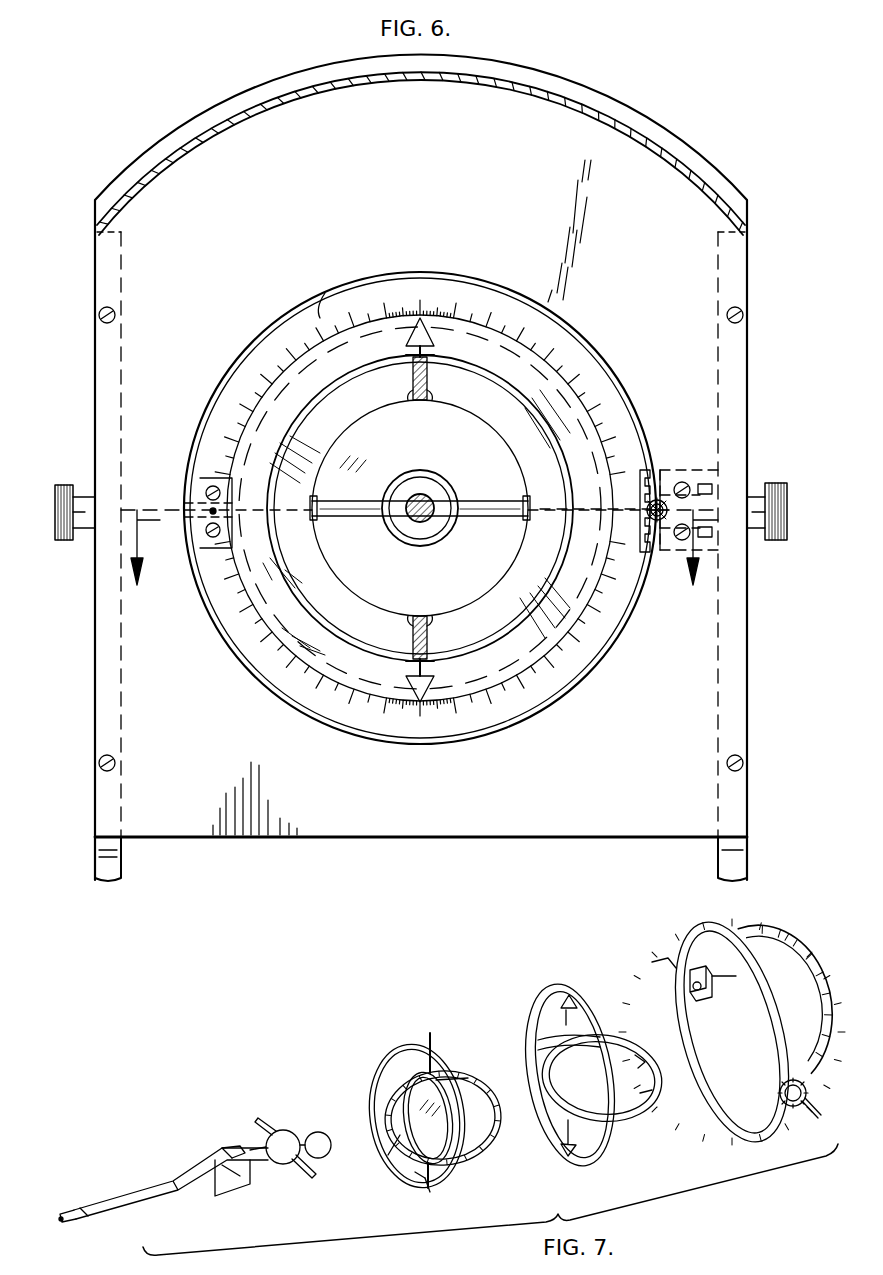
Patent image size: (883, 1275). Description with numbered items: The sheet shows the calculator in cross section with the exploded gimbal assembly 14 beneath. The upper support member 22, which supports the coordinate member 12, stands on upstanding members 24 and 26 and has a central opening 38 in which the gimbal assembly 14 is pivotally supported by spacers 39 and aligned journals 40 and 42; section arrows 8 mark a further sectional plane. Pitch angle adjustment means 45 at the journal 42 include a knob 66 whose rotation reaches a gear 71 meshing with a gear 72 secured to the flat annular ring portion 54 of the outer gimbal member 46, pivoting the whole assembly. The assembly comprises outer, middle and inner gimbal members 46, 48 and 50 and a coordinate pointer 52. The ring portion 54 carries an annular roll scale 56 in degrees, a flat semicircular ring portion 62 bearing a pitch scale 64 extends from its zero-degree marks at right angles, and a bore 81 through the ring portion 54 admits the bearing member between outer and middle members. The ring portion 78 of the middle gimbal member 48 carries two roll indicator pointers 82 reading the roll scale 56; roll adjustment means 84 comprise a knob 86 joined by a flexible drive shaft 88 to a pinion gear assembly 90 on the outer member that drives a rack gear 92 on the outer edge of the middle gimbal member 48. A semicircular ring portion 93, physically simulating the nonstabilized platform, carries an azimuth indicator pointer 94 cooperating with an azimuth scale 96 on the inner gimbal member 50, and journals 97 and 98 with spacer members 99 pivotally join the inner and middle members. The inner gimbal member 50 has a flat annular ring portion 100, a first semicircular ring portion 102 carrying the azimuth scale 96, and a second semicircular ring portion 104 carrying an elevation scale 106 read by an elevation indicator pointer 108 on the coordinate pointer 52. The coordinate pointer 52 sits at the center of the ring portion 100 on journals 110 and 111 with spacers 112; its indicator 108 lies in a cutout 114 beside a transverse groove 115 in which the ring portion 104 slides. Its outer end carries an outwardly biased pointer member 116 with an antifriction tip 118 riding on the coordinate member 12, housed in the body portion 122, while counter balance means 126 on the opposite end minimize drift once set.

In FIG. 6, the section line 8- 8 is at (423, 566).
In FIG. 6, the coordinate member 12 is at (372, 85).
In FIG. 7, the gimbal assembly 14 is at (338, 1032).
In FIG. 6, the upper support member 22 is at (572, 85).
In FIG. 6, the upstanding member 24 is at (112, 882).
In FIG. 6, the upstanding member 26 is at (752, 850).
In FIG. 6, the opening 38 is at (420, 523).
In FIG. 6, the spacers 39 is at (200, 503).
In FIG. 6, the journal 40 is at (175, 530).
In FIG. 7, the journal 40 is at (652, 962).
In FIG. 6, the journal 42 is at (595, 534).
In FIG. 7, the journal 42 is at (812, 1118).
In FIG. 6, the pitch angle adjustment means 45 is at (700, 472).
In FIG. 6, the outer gimbal member 46 is at (399, 525).
In FIG. 7, the outer gimbal member 46 is at (740, 928).
In FIG. 6, the middle gimbal member 48 is at (571, 553).
In FIG. 7, the middle gimbal member 48 is at (524, 1000).
In FIG. 6, the inner gimbal member 50 is at (322, 600).
In FIG. 7, the inner gimbal member 50 is at (372, 1088).
In FIG. 6, the coordinate pointer 52 is at (404, 523).
In FIG. 7, the coordinate pointer 52 is at (175, 1162).
In FIG. 6, the flat annular ring portion 54 is at (442, 508).
In FIG. 7, the flat annular ring portion 54 is at (752, 1138).
In FIG. 6, the annular roll scale 56 is at (419, 508).
In FIG. 7, the annular roll scale 56 is at (708, 1110).
In FIG. 7, the flat semicircular ring portion 62 is at (804, 940).
In FIG. 7, the pitch scale 64 is at (822, 970).
In FIG. 6, the knob 66 is at (787, 488).
In FIG. 6, the gear 71 is at (660, 548).
In FIG. 6, the gear 72 is at (654, 474).
In FIG. 7, the gear 72 is at (806, 1092).
In FIG. 6, the ring portion 78 is at (247, 609).
In FIG. 7, the ring portion 78 is at (596, 1158).
In FIG. 6, the bore 81 is at (319, 284).
In FIG. 6, the roll indicator pointers 82 is at (420, 512).
In FIG. 7, the roll indicator pointers 82 is at (576, 1008).
In FIG. 7, the roll adjustment means 84 is at (705, 1002).
In FIG. 6, the knob 86 is at (55, 512).
In FIG. 7, the flexible drive shaft 88 is at (736, 976).
In FIG. 7, the pinion gear assembly 90 is at (693, 988).
In FIG. 6, the rack gear 92 is at (417, 508).
In FIG. 7, the rack gear 92 is at (558, 985).
In FIG. 7, the semicircular ring portion 93 is at (648, 1090).
In FIG. 7, the azimuth indicator pointer 94 is at (640, 1060).
In FIG. 7, the azimuth scale 96 is at (470, 1080).
In FIG. 6, the journal 97 is at (440, 400).
In FIG. 7, the journal 97 is at (432, 1038).
In FIG. 6, the journal 98 is at (439, 700).
In FIG. 7, the journal 98 is at (448, 1128).
In FIG. 6, the spacer members 99 is at (419, 511).
In FIG. 6, the flat annular ring portion 100 is at (450, 570).
In FIG. 7, the flat annular ring portion 100 is at (410, 1046).
In FIG. 7, the first semicircular ring portion 102 is at (497, 1105).
In FIG. 6, the second semicircular ring portion 104 is at (407, 508).
In FIG. 7, the second semicircular ring portion 104 is at (412, 1172).
In FIG. 7, the elevation scale 106 is at (388, 1155).
In FIG. 7, the elevation indicator pointer 108 is at (260, 1180).
In FIG. 6, the journal 110 is at (421, 492).
In FIG. 7, the journal 110 is at (314, 1180).
In FIG. 6, the journal 111 is at (360, 478).
In FIG. 7, the journal 111 is at (258, 1116).
In FIG. 6, the spacers 112 is at (420, 528).
In FIG. 7, the cutout 114 is at (215, 1195).
In FIG. 7, the transverse channel 115 is at (228, 1146).
In FIG. 7, the pointer member 116 is at (66, 1210).
In FIG. 7, the antifriction tip 118 is at (60, 1222).
In FIG. 7, the body portion 122 is at (115, 1200).
In FIG. 7, the counter balance means 126 is at (322, 1133).